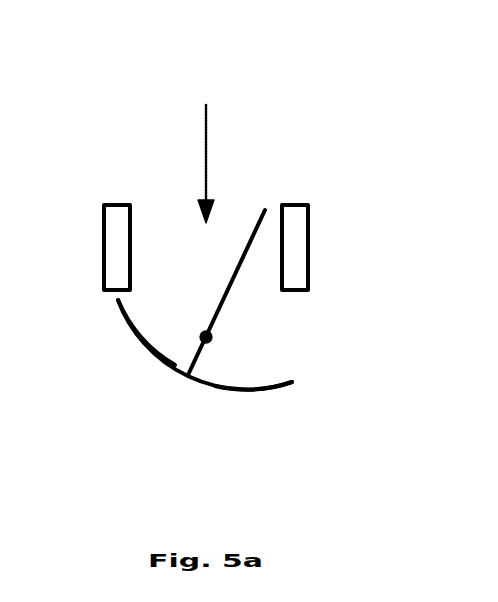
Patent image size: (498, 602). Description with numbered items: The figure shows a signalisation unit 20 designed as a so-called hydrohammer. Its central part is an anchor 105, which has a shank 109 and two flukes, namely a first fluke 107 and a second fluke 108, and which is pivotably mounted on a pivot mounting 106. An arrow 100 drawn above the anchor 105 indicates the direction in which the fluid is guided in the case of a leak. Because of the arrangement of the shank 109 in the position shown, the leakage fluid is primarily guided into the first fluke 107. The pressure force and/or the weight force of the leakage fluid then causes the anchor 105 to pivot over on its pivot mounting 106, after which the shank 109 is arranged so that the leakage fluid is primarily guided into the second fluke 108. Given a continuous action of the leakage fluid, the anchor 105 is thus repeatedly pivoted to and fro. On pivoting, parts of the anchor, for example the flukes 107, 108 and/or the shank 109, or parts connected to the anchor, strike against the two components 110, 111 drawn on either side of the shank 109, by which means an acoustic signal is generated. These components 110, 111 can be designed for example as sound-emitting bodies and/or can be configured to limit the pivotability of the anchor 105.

The signalisation unit 20 is at (117, 82).
The arrow 100 is at (208, 117).
The anchor 105 is at (122, 338).
The pivot mounting 106 is at (205, 343).
The first fluke 107 is at (147, 355).
The second fluke 108 is at (253, 395).
The shank 109 is at (237, 288).
The component 110 is at (117, 203).
The component 111 is at (295, 201).